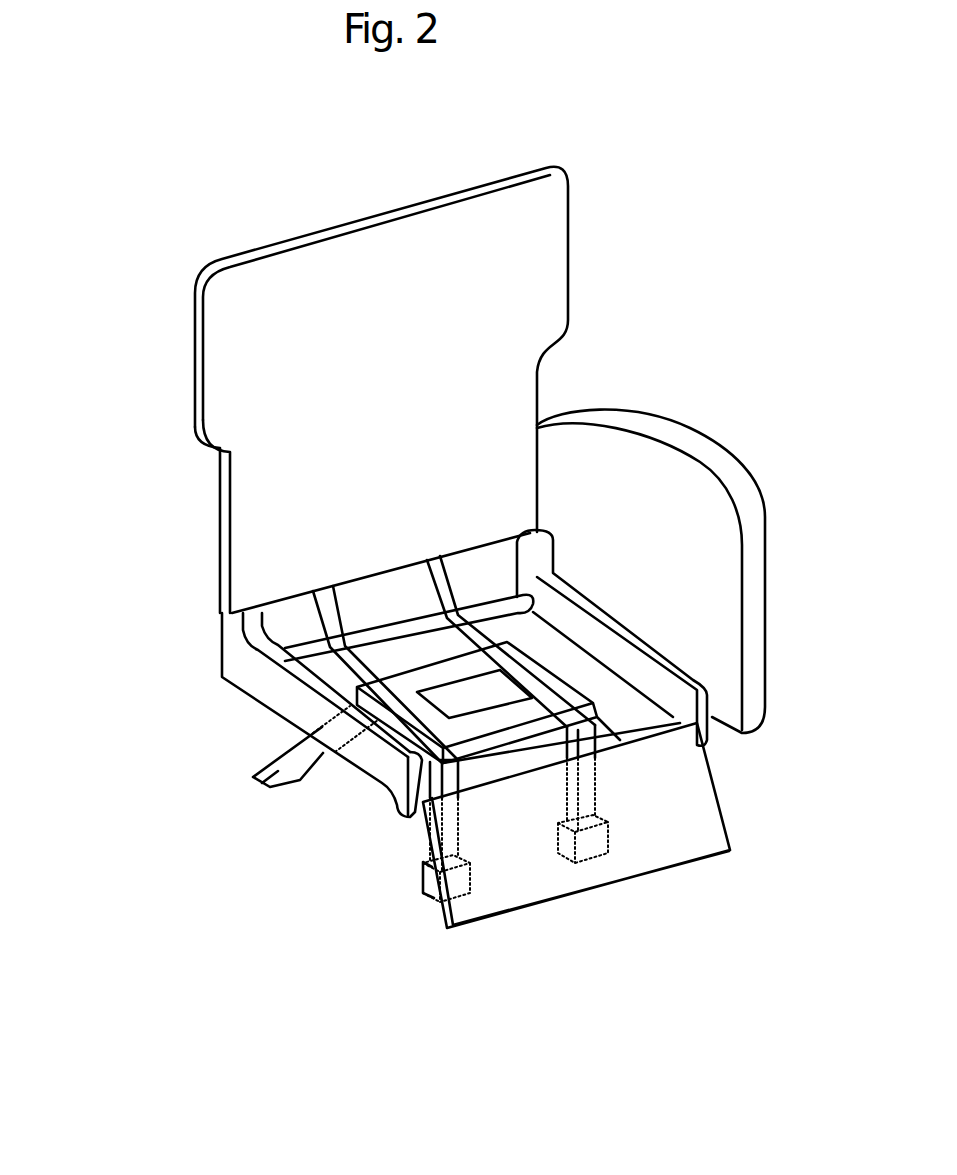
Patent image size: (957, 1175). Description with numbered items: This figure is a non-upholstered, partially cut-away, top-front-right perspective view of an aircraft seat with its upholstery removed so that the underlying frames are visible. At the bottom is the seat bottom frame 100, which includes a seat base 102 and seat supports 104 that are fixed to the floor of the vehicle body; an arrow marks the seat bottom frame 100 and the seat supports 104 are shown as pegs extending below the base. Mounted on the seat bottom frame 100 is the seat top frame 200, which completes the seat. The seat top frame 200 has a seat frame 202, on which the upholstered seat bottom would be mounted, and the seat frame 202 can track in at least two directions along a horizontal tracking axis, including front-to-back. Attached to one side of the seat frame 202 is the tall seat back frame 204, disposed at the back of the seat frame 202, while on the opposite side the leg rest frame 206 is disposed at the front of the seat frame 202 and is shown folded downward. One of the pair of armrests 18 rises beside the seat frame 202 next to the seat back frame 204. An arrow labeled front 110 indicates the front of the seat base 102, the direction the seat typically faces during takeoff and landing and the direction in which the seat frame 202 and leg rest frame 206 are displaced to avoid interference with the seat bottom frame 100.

The seat top frame 200 is at (740, 303).
The seat back frame 204 is at (528, 258).
The armrest 18 is at (642, 507).
The seat base 102 is at (358, 685).
The seat frame 202 is at (474, 694).
The seat supports 104 is at (272, 777).
The leg rest frame 206 is at (688, 800).
The seat bottom frame 100 is at (190, 728).
The front 110 is at (640, 903).